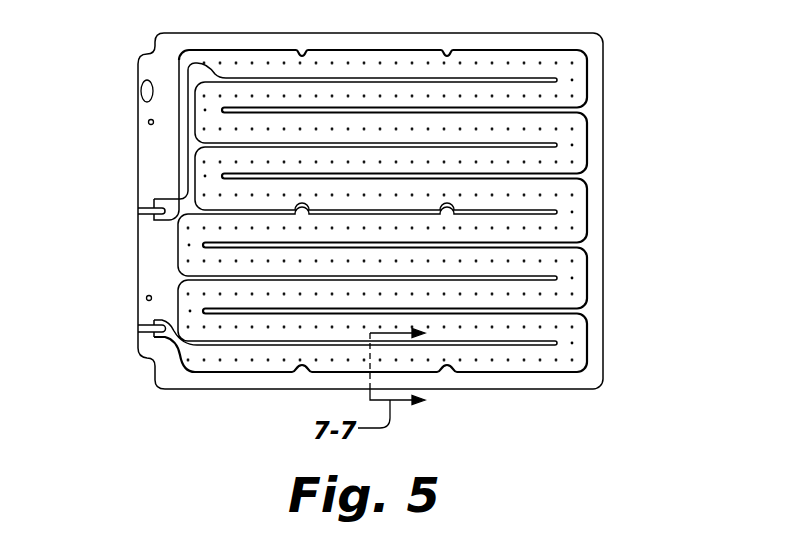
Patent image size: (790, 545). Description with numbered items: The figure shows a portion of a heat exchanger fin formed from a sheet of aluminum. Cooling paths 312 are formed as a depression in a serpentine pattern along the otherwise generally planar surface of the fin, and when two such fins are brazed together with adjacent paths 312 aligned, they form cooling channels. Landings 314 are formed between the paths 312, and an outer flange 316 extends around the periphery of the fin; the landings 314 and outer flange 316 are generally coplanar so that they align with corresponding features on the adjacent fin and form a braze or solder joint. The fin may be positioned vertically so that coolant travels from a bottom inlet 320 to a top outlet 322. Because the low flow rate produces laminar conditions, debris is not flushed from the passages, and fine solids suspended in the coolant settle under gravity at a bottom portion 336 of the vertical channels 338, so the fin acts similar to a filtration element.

The cooling paths 312 is at (570, 233).
The landings 314 is at (543, 143).
The outer flange 316 is at (593, 142).
The bottom inlet 320 is at (140, 328).
The top outlet 322 is at (140, 210).
The bottom portion 336 is at (562, 363).
The vertical channels 338 is at (570, 334).